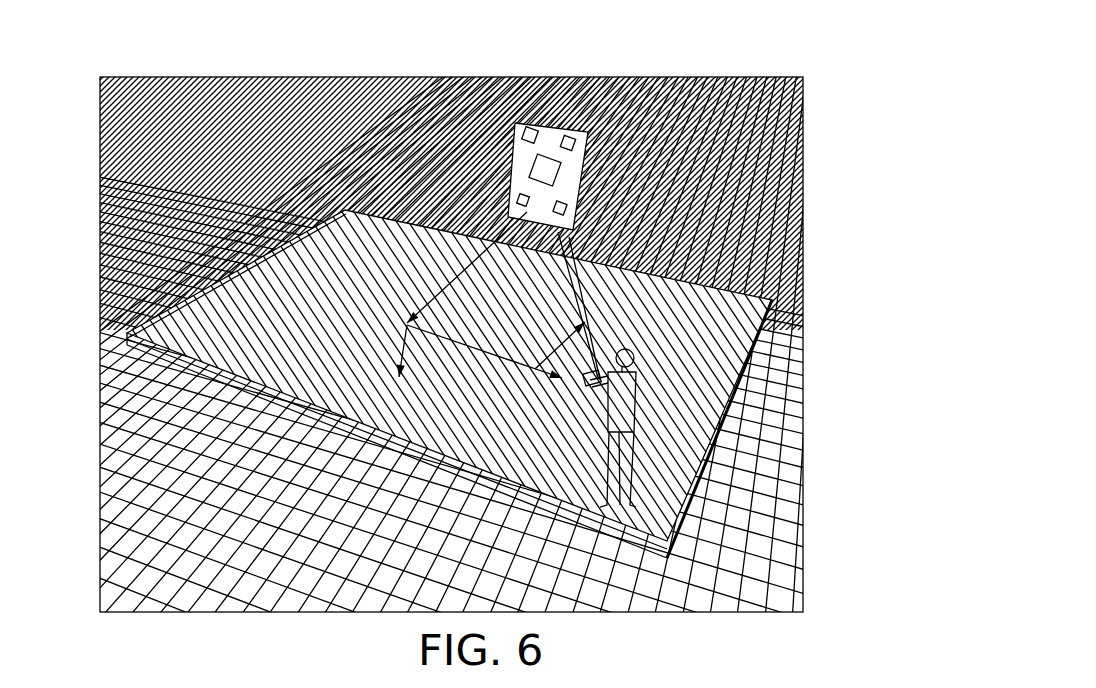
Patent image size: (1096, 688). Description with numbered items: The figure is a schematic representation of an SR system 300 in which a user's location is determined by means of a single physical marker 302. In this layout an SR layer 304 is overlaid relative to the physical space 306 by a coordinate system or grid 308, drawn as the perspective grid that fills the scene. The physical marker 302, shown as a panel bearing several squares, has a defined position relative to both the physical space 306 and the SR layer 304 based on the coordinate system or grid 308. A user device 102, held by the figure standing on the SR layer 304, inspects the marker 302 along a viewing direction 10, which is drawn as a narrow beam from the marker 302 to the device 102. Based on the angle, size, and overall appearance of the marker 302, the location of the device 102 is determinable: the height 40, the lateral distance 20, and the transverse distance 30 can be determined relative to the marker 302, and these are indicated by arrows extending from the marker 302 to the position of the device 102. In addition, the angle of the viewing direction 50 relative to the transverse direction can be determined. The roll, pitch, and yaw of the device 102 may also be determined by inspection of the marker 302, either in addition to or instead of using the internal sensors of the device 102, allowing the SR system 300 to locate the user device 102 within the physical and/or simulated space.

The SR system 300 is at (836, 92).
The physical marker 302 is at (520, 122).
The SR layer 304 is at (712, 366).
The physical space 306 is at (637, 538).
The coordinate system or grid 308 is at (190, 415).
The viewing direction 10 is at (576, 290).
The lateral distance 20 is at (447, 280).
The transverse distance 30 is at (494, 358).
The height 40 is at (400, 355).
The angle of the viewing direction 50 is at (553, 322).
The user device 102 is at (583, 383).